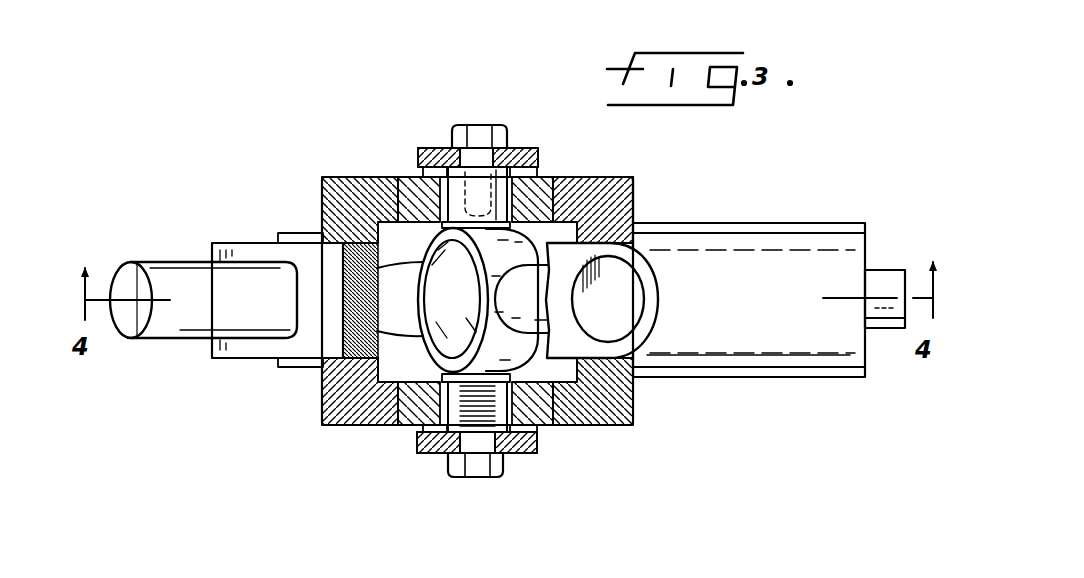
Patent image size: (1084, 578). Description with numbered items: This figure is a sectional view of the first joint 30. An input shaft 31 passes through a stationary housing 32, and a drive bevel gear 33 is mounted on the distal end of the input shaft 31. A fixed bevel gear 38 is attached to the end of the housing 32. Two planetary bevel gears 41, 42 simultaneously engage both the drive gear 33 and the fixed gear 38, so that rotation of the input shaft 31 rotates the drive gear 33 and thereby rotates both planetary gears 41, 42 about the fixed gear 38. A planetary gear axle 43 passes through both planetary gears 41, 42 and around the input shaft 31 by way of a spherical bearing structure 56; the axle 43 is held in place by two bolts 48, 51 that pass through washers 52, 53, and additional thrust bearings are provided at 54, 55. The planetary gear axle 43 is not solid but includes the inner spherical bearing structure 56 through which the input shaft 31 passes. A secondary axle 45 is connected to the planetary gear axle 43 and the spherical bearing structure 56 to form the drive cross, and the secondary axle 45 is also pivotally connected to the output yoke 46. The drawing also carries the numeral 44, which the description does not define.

The first joint 30 is at (312, 162).
The input shaft 31 is at (882, 278).
The stationary housing 32 is at (777, 225).
The drive bevel gear 33 is at (320, 390).
The fixed bevel gear 38 is at (637, 202).
The planetary bevel gear 41 is at (587, 180).
The planetary bevel gear 42 is at (597, 425).
The planetary gear axle 43 is at (533, 430).
The input shaft 44 is at (160, 330).
The secondary axle 45 is at (537, 296).
The output yoke 46 is at (660, 296).
The bolt 48 is at (488, 125).
The bolt 51 is at (465, 475).
The washer 52 is at (433, 148).
The washer 53 is at (433, 450).
The thrust bearing 54 is at (418, 172).
The thrust bearing 55 is at (417, 430).
The spherical bearing structure 56 is at (423, 355).